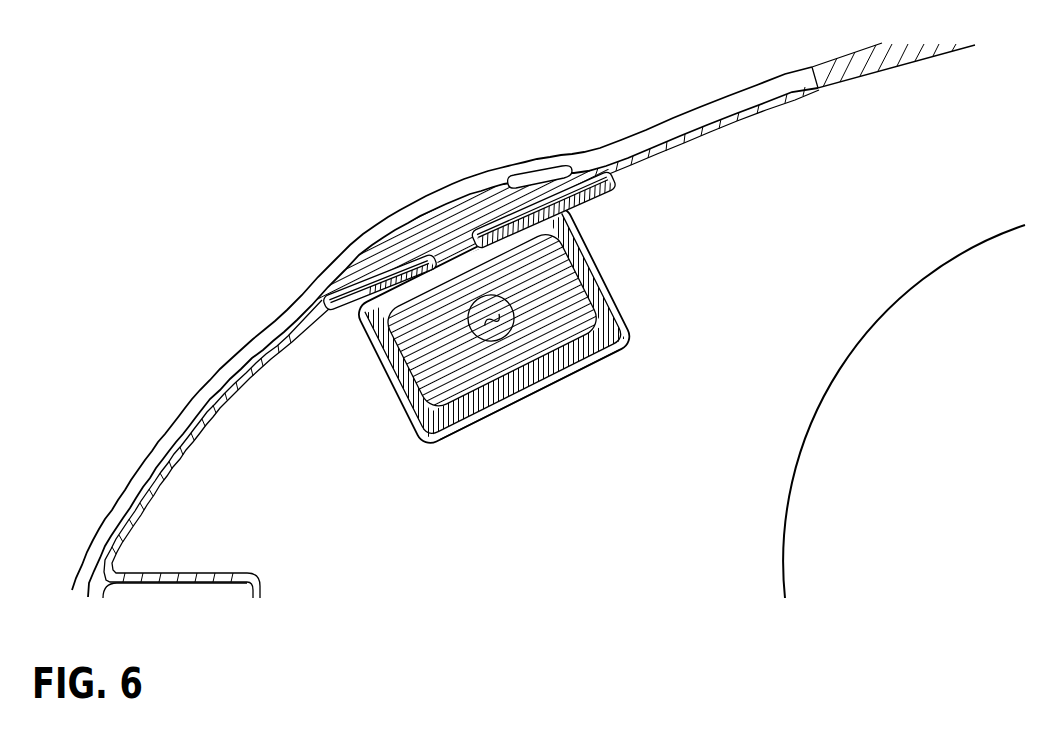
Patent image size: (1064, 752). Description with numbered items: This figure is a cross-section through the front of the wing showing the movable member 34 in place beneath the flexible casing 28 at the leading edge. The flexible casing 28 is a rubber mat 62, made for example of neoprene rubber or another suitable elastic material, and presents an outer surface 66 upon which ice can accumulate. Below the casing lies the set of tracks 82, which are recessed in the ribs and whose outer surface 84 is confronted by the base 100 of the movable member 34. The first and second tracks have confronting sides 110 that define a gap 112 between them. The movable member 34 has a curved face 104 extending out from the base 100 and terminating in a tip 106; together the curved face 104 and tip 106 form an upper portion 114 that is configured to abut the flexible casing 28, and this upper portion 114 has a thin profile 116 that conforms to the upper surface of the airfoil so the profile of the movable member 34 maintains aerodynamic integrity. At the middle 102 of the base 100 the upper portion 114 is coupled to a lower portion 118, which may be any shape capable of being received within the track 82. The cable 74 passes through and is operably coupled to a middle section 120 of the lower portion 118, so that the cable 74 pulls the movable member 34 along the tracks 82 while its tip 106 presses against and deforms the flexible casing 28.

The flexible casing 28 is at (257, 350).
The movable member 34 is at (452, 165).
The rubber mat 62 is at (603, 156).
The surface 66 is at (709, 115).
The cable 74 is at (491, 340).
The set of tracks 82 is at (637, 348).
The outer surface 84 is at (432, 298).
The base 100 is at (347, 305).
The middle 102 is at (460, 258).
The curved face 104 is at (507, 181).
The tip 106 is at (469, 293).
The confronting sides 110 is at (442, 239).
The gap 112 is at (466, 236).
The upper portion 114 is at (438, 236).
The thin profile 116 is at (385, 262).
The lower portion 118 is at (543, 344).
The middle section 120 is at (502, 307).